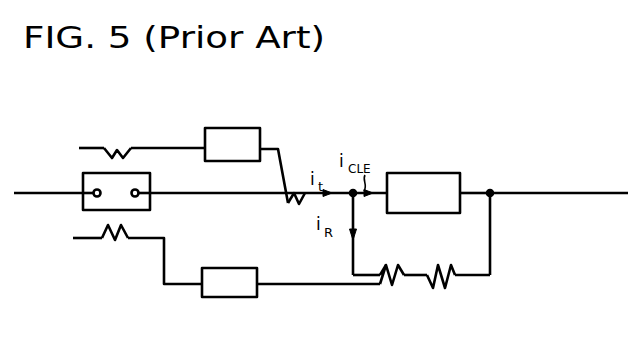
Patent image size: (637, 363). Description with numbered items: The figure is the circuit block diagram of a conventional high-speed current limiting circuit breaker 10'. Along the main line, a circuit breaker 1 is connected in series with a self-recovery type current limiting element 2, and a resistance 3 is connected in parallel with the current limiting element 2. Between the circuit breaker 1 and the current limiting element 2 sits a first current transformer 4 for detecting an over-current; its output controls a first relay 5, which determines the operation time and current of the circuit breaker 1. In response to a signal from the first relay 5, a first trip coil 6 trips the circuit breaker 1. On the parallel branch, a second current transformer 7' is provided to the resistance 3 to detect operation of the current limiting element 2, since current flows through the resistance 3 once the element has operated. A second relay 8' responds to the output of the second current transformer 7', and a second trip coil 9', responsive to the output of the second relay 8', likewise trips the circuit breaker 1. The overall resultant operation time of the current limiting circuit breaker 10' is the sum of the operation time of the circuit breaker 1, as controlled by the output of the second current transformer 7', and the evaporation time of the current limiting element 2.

The circuit breaker 1 is at (82, 204).
The self-recovery type current limiting element 2 is at (437, 172).
The resistance 3 is at (444, 288).
The first current transformer 4 is at (298, 190).
The first relay 5 is at (240, 128).
The first trip coil 6 is at (118, 147).
The second current transformer 7' is at (392, 295).
The second relay 8' is at (277, 299).
The second trip coil 9' is at (115, 247).
The current limiting circuit breaker 10' is at (559, 219).